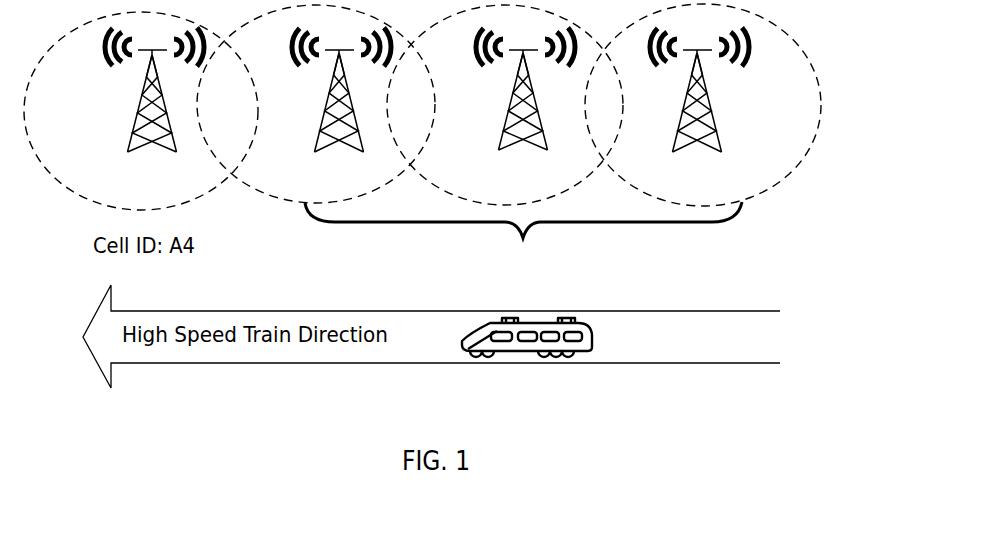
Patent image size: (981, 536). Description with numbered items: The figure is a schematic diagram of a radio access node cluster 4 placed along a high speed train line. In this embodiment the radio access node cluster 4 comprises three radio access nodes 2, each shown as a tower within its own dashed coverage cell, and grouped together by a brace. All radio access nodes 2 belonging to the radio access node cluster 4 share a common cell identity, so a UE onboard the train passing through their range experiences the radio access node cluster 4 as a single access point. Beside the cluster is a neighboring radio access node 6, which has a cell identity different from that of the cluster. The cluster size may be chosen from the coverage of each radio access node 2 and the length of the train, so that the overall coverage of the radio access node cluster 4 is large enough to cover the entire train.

The radio access node 2 is at (325, 110).
The radio access node cluster 4 is at (523, 249).
The neighboring radio access node 6 is at (138, 110).